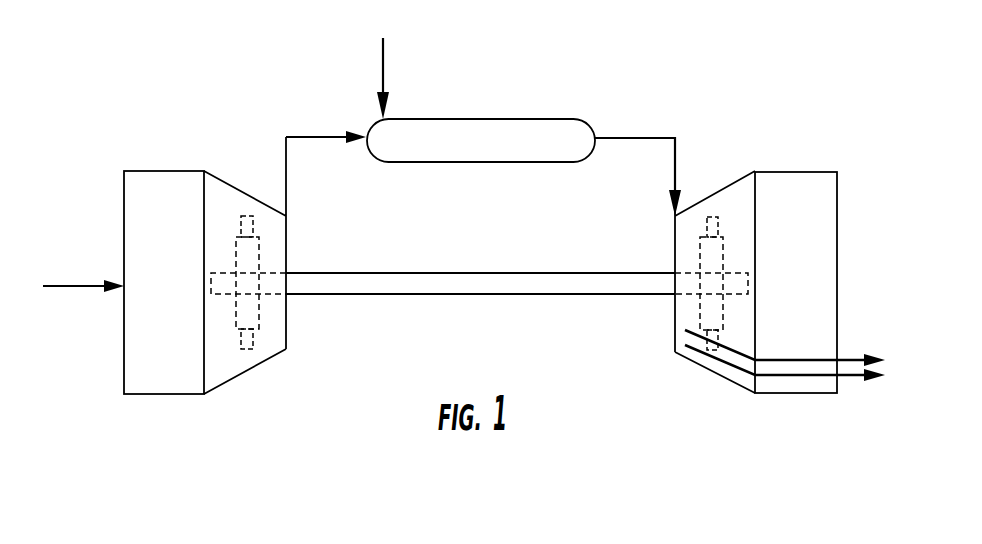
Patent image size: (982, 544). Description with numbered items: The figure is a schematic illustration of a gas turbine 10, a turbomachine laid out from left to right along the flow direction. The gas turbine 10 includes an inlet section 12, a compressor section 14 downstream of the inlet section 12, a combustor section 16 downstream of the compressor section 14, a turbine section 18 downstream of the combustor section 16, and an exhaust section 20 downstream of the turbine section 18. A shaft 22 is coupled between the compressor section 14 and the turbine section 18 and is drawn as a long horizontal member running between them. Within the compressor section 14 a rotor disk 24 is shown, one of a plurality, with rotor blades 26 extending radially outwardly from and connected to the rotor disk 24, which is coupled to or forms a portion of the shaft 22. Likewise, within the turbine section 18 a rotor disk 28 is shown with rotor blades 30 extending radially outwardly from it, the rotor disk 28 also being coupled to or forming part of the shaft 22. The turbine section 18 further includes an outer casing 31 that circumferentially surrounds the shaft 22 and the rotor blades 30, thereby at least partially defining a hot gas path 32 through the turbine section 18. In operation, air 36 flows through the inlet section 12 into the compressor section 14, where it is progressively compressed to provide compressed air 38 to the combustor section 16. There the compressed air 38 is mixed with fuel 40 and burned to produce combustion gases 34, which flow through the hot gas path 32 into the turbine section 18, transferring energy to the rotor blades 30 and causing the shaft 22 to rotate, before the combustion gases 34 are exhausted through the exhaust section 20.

The gas turbine 10 is at (327, 55).
The inlet section 12 is at (145, 169).
The compressor section 14 is at (234, 185).
The combustor section 16 is at (535, 119).
The turbine section 18 is at (728, 186).
The exhaust section 20 is at (813, 170).
The shaft 22 is at (440, 295).
The rotor disk 24 is at (235, 247).
The rotor blade 26 is at (238, 224).
The rotor disk 28 is at (700, 253).
The rotor blade 30 is at (713, 217).
The outer casing 31 is at (748, 393).
The hot gas path 32 is at (722, 380).
The combustion gases 34 is at (645, 140).
The air 36 is at (83, 290).
The compressed air 38 is at (315, 140).
The fuel 40 is at (385, 78).